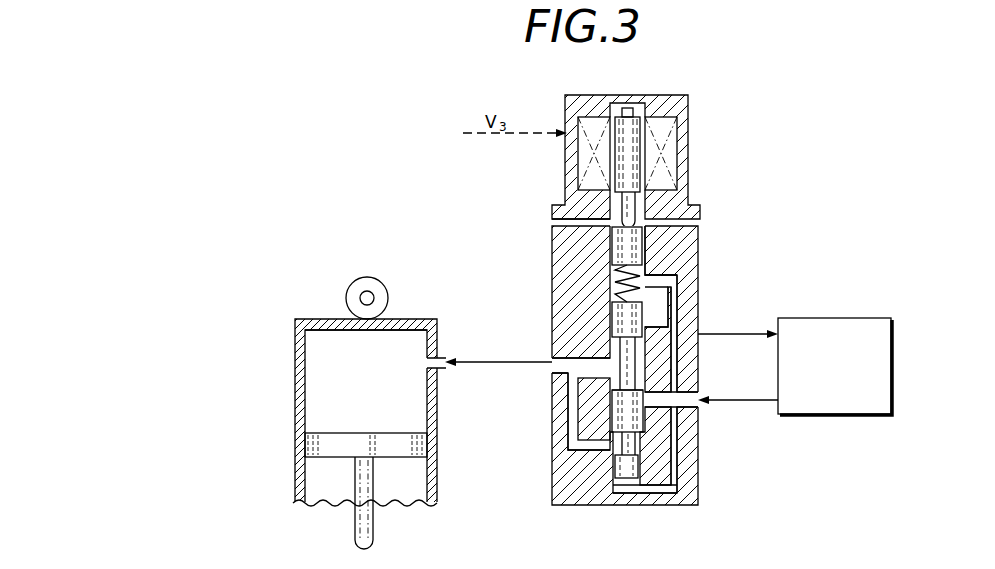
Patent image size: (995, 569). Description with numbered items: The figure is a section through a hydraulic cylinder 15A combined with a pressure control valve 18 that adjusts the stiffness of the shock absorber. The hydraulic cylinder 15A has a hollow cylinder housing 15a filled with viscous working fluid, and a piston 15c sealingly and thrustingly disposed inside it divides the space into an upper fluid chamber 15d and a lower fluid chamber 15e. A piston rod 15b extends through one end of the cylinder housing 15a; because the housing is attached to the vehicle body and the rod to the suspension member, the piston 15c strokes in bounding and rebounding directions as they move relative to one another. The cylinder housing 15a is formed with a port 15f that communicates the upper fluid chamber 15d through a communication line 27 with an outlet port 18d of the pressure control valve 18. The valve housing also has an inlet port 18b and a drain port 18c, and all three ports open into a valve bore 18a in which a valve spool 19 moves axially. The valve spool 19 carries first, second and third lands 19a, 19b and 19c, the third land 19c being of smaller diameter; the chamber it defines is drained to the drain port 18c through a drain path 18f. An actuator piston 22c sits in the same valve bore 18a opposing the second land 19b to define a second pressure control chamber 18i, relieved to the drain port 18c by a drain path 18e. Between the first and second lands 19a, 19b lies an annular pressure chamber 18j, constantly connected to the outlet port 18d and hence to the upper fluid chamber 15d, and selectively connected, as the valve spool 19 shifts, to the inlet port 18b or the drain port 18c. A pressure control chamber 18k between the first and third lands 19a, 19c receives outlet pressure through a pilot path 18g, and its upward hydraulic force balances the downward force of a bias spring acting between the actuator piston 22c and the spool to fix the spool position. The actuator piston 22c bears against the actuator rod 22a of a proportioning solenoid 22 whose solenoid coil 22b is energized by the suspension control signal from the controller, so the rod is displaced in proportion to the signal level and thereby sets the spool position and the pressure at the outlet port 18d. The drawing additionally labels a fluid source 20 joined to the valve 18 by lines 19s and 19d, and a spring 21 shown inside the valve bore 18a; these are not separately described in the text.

The hydraulic cylinder 15A is at (287, 442).
The cylinder housing 15a is at (298, 404).
The piston rod 15b is at (377, 529).
The piston 15c is at (418, 448).
The upper fluid chamber 15d is at (322, 357).
The lower fluid chamber 15e is at (318, 485).
The port 15f is at (437, 357).
The pressure control valve 18 is at (562, 506).
The valve bore 18a is at (610, 268).
The inlet port 18b is at (690, 403).
The drain port 18c is at (660, 308).
The outlet port 18d is at (576, 358).
The drain path 18e is at (650, 281).
The drain path 18f is at (660, 508).
The pilot path 18g is at (594, 448).
The second pressure control chamber 18i is at (660, 262).
The annular pressure chamber 18j is at (674, 334).
The pressure control chamber 18k is at (624, 480).
The valve spool 19 is at (620, 430).
The first land 19a is at (618, 405).
The second land 19b is at (620, 320).
The third land 19c is at (613, 462).
The return conduit 19d is at (738, 350).
The supply conduit 19s is at (718, 399).
The fluid source 20 is at (824, 318).
The spring 21 is at (617, 292).
The proportioning solenoid 22 is at (688, 133).
The actuator rod 22a is at (632, 207).
The solenoid coil 22b is at (661, 119).
The actuator piston 22c is at (600, 223).
The communication line 27 is at (470, 366).